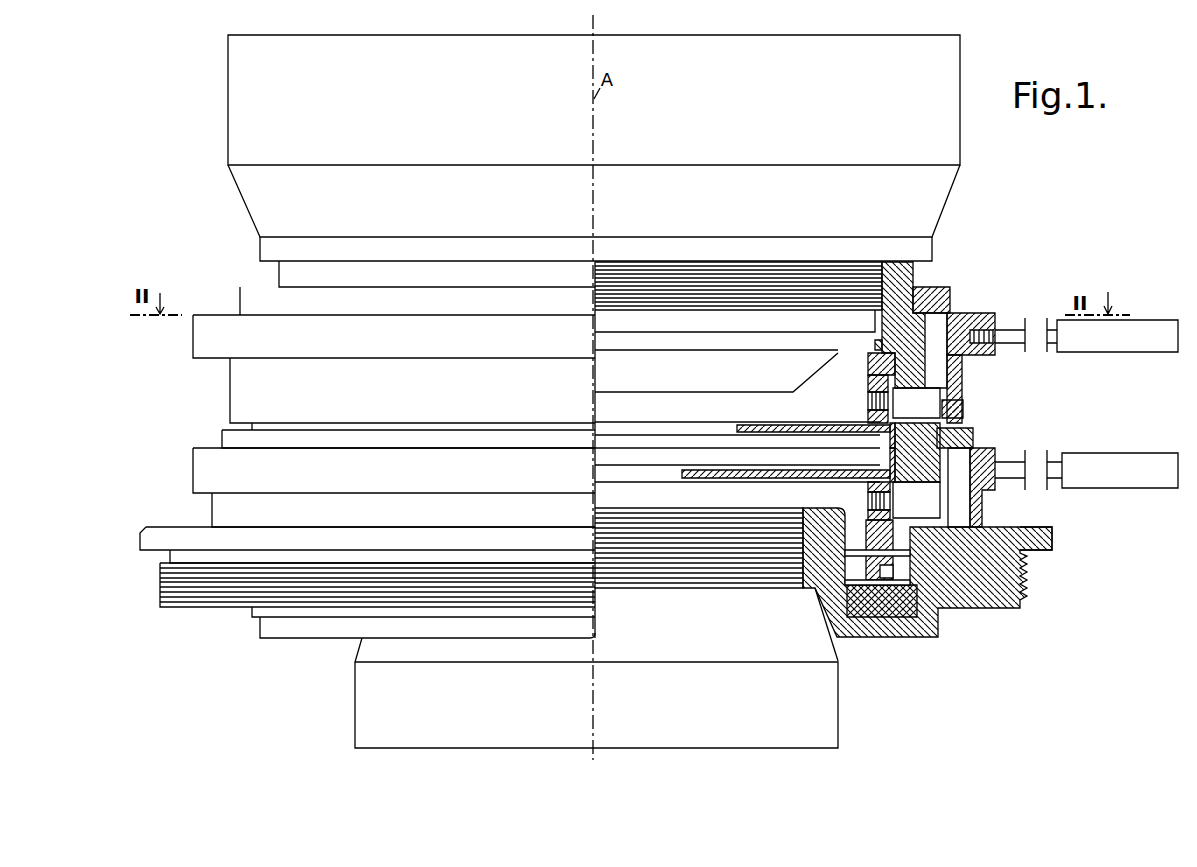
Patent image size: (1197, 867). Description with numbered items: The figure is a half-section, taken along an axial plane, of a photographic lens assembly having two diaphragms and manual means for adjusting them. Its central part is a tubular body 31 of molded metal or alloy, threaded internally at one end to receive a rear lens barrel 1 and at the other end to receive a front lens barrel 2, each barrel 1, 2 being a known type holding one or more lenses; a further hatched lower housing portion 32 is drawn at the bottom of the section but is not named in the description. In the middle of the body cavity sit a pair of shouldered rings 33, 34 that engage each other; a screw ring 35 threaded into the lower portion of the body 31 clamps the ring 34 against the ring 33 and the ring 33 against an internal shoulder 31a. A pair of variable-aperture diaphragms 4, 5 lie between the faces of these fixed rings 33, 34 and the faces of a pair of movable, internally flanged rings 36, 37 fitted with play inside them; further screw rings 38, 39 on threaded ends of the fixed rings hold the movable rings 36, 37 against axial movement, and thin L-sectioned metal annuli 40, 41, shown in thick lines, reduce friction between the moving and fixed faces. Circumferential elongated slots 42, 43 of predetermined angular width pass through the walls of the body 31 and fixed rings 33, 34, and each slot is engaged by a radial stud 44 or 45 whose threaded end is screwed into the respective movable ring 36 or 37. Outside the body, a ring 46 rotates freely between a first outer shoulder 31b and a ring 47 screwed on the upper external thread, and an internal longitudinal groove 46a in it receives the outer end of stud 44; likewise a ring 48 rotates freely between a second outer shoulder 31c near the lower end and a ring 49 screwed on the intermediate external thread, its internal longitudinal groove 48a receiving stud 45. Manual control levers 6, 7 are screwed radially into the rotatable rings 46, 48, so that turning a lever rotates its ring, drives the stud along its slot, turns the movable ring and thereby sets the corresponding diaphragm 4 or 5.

The rear lens barrel 1 is at (965, 135).
The front lens barrel 2 is at (845, 694).
The variable-aperture diaphragm 4 is at (750, 425).
The variable-aperture diaphragm 5 is at (718, 478).
The manual control lever 6 is at (1025, 330).
The manual control lever 7 is at (1012, 462).
The tubular body 31 is at (921, 273).
The shoulder 31a is at (878, 347).
The first outer shoulder 31b is at (940, 405).
The second outer shoulder 31c is at (1010, 528).
The lower housing 32 is at (900, 630).
The shouldered ring 33 is at (890, 444).
The shouldered ring 34 is at (862, 444).
The screw ring 35 is at (842, 600).
The movable internally flanged ring 36 is at (868, 418).
The movable internally flanged ring 37 is at (890, 480).
The screw ring 38 is at (868, 362).
The screw ring 39 is at (815, 586).
The L-sectioned metal annulus 40 is at (868, 392).
The L-sectioned metal annulus 41 is at (869, 505).
The elongated slot 42 is at (920, 386).
The elongated slot 43 is at (916, 500).
The radial stud 44 is at (916, 403).
The radial stud 45 is at (955, 506).
The rotatable ring 46 is at (960, 318).
The internal longitudinal groove 46a is at (940, 338).
The ring 47 is at (937, 290).
The rotatable ring 48 is at (960, 446).
The internal longitudinal groove 48a is at (960, 477).
The ring 49 is at (950, 428).